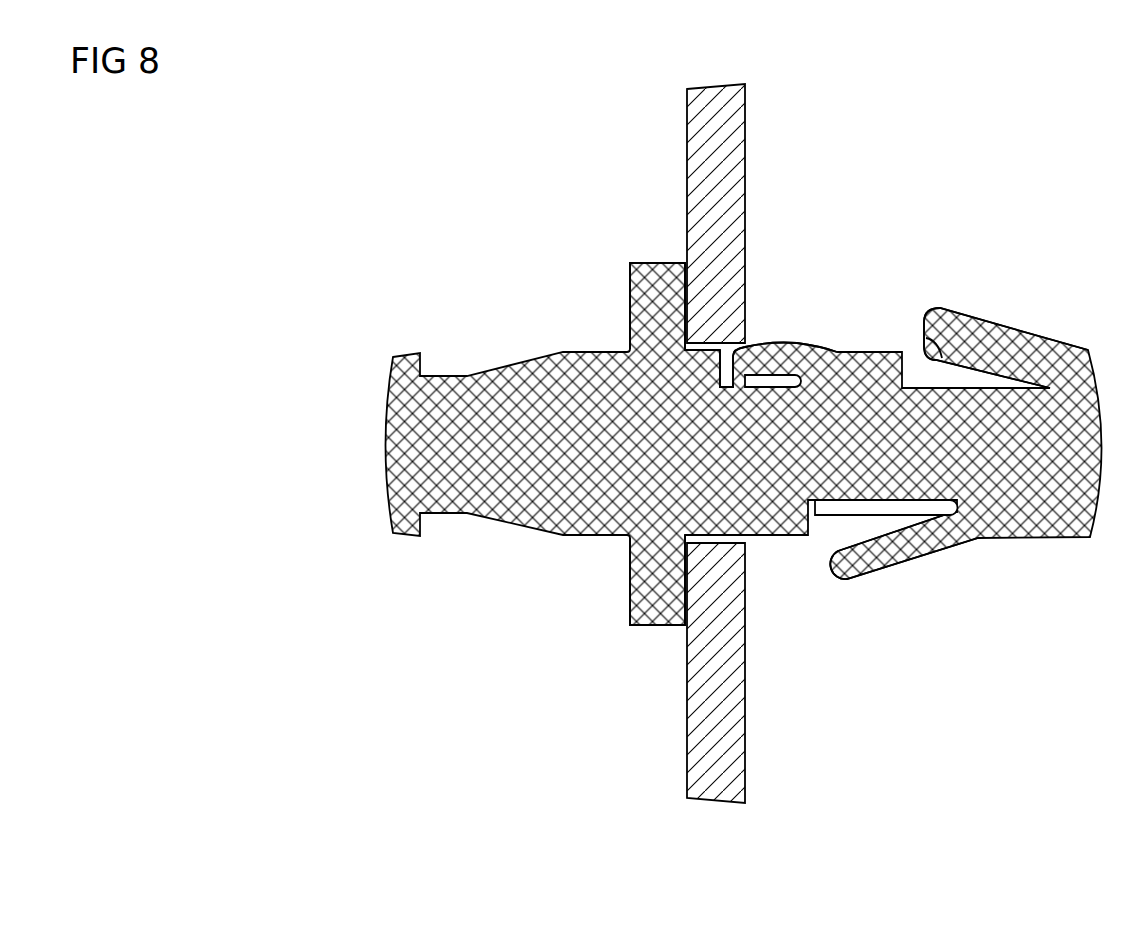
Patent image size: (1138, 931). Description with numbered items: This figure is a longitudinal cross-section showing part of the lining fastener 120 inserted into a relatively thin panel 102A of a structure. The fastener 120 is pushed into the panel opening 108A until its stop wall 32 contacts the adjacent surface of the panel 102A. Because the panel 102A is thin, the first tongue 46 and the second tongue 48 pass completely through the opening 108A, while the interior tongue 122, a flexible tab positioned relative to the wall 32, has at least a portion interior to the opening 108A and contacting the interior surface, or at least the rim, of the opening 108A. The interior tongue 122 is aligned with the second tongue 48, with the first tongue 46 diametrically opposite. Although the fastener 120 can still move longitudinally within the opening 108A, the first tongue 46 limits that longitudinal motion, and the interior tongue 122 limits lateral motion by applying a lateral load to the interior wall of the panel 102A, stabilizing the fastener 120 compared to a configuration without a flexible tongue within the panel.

The lining fastener 120 is at (487, 298).
The wall 32 is at (645, 626).
The interior tongue 122 is at (782, 343).
The second tongue 48 is at (994, 323).
The first tongue 46 is at (885, 578).
The panel 102A is at (707, 84).
The panel opening 108A is at (748, 543).